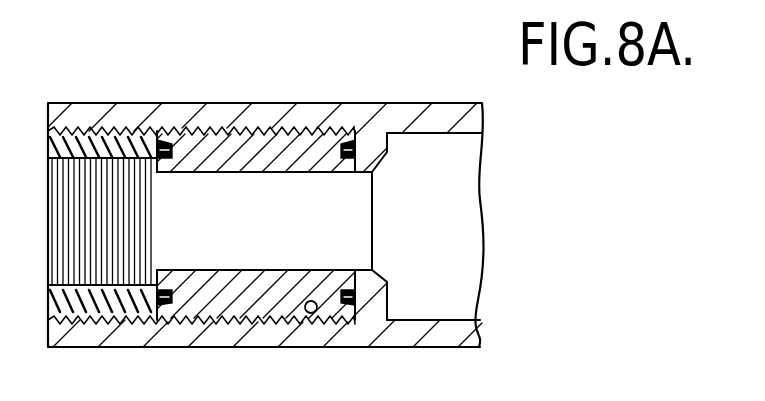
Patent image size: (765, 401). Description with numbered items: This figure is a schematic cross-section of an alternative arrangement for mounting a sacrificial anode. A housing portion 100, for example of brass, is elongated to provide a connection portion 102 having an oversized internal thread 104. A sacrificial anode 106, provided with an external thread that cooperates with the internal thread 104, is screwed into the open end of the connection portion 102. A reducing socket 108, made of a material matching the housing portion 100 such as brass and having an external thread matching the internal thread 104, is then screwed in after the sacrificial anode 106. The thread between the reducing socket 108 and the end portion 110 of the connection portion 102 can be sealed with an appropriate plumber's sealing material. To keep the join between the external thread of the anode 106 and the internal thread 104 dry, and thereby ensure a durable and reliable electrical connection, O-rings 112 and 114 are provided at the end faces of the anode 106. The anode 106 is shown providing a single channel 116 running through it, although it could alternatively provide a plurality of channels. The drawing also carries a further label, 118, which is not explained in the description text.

The housing portion 100 is at (420, 76).
The connection portion 102 is at (357, 100).
The internal thread 104 is at (315, 311).
The sacrificial anode 106 is at (205, 300).
The reducing socket 108 is at (102, 302).
The end portion 110 is at (157, 100).
The O-ring 112 is at (174, 149).
The O-ring 114 is at (322, 132).
The channel 116 is at (268, 243).
The chamber 118 is at (430, 297).